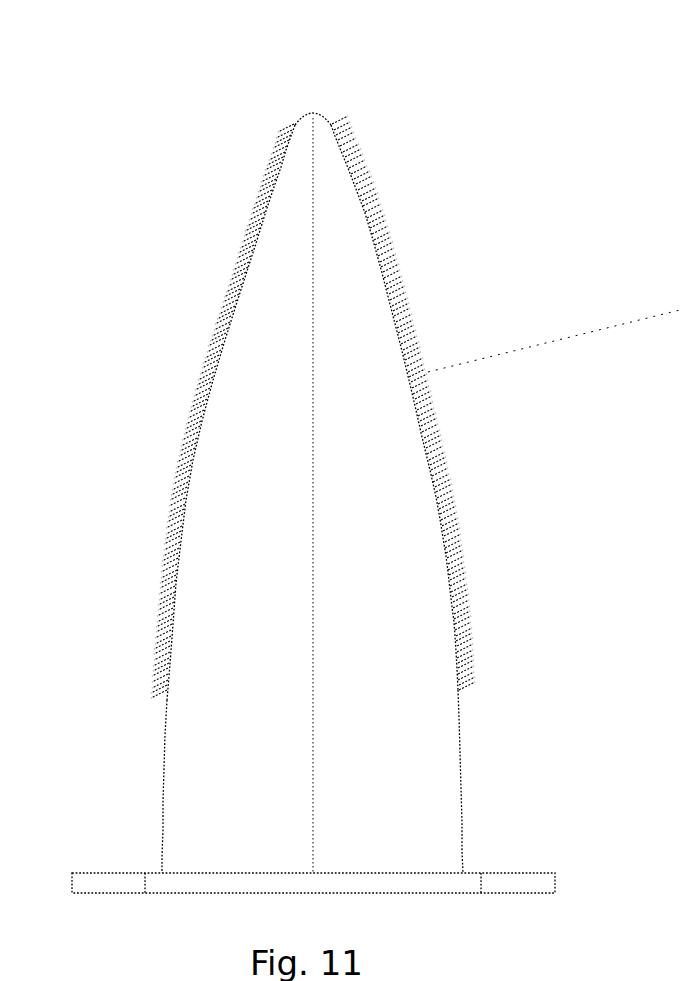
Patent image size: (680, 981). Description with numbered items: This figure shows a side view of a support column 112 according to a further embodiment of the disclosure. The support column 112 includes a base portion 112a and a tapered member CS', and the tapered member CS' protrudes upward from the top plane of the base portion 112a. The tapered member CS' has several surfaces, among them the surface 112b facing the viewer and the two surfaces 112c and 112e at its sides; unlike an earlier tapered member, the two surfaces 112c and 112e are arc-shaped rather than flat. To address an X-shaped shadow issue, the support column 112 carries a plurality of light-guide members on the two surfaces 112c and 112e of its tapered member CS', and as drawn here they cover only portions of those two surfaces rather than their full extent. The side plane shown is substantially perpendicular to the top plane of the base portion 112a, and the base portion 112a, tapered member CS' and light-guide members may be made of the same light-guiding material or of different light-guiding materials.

The support column 112 is at (176, 168).
The tapered member CS' is at (313, 382).
The base portion 112a is at (556, 878).
The surface 112b is at (374, 591).
The surface 112c is at (163, 774).
The surface 112e is at (465, 775).